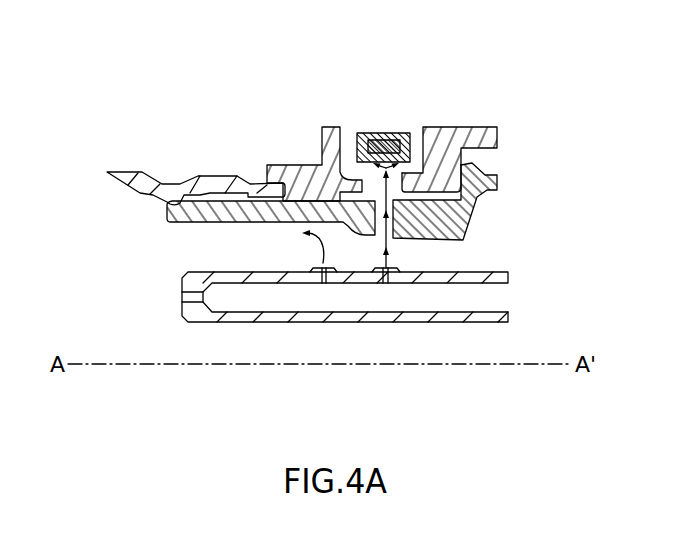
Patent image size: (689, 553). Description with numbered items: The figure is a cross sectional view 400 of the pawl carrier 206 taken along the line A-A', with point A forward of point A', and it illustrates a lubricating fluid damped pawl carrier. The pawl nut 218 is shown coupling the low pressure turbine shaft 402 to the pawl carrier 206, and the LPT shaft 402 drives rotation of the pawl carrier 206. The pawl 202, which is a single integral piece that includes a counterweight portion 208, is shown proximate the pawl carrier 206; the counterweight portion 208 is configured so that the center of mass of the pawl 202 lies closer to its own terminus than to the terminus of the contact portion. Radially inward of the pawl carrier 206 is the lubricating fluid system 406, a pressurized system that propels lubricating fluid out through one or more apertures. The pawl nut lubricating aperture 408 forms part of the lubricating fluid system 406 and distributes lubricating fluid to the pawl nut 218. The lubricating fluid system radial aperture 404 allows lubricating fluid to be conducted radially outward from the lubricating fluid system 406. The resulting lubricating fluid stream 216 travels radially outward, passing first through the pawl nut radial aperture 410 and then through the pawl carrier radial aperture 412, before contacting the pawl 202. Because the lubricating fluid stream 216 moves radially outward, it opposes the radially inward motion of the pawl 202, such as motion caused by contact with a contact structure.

The cross sectional view 400 is at (98, 96).
The low pressure turbine shaft 402 is at (138, 152).
The pawl nut 218 is at (192, 212).
The counterweight portion 208 is at (355, 133).
The pawl 202 is at (376, 118).
The lubricating fluid stream 216 is at (414, 150).
The pawl carrier 206 is at (468, 127).
The pawl carrier radial aperture 412 is at (402, 185).
The pawl nut radial aperture 410 is at (395, 208).
The lubricating fluid system 406 is at (172, 273).
The pawl nut lubricating aperture 408 is at (312, 268).
The lubricating fluid system radial aperture 404 is at (400, 276).